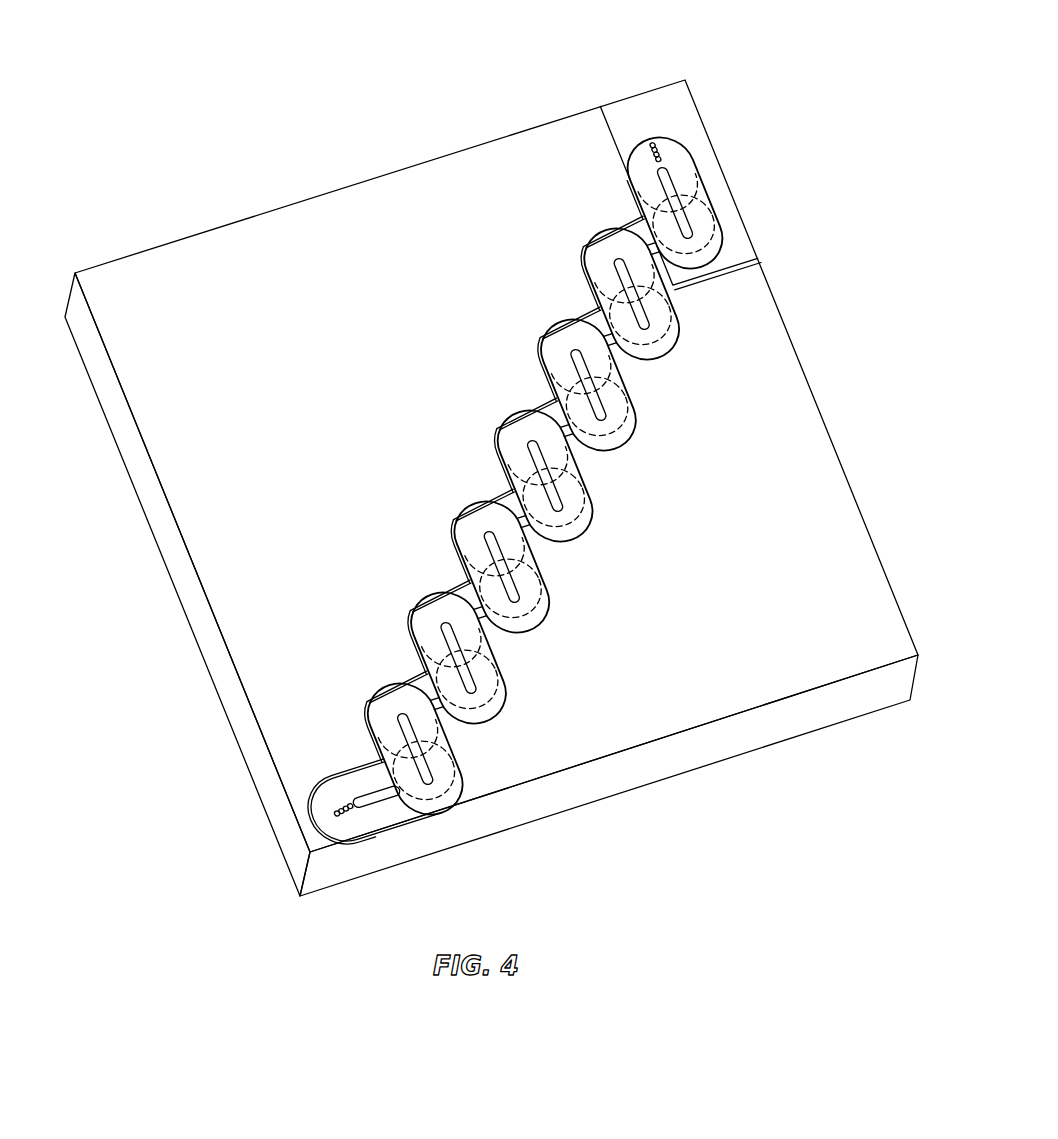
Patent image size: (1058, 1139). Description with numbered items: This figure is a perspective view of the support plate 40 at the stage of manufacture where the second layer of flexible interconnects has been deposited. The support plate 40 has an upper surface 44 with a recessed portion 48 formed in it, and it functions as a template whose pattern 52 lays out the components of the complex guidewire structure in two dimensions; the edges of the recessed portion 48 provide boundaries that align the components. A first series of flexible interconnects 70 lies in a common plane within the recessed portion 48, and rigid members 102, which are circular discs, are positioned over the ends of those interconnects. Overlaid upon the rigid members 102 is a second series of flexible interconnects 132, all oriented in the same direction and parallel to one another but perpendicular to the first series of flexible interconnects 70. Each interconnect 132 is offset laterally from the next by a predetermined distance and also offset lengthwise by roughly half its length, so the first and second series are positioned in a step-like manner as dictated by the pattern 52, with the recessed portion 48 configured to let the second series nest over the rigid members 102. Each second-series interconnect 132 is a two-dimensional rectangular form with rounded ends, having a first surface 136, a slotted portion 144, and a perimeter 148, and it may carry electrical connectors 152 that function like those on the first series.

The support plate 40 is at (878, 534).
The upper surface 44 is at (783, 413).
The recessed portion 48 is at (687, 118).
The pattern 52 is at (502, 406).
The first series of flexible interconnects 70 is at (533, 547).
The rigid members 102 is at (510, 677).
The second series of flexible interconnects 132 is at (670, 288).
The first surface 136 is at (650, 186).
The slotted portion 144 is at (685, 175).
The perimeter 148 is at (654, 146).
The electrical connectors 152 is at (633, 165).